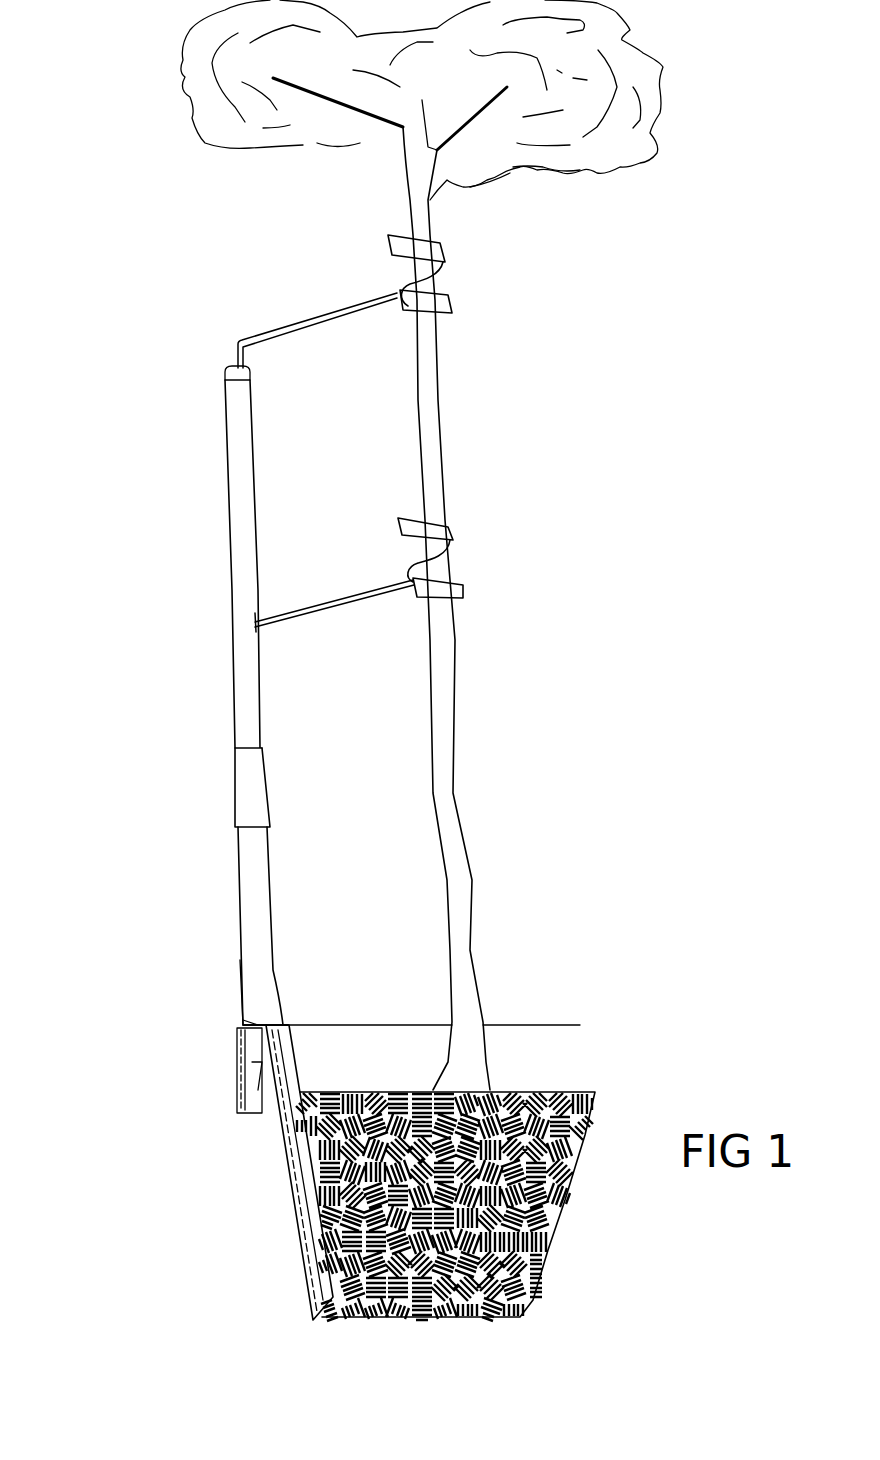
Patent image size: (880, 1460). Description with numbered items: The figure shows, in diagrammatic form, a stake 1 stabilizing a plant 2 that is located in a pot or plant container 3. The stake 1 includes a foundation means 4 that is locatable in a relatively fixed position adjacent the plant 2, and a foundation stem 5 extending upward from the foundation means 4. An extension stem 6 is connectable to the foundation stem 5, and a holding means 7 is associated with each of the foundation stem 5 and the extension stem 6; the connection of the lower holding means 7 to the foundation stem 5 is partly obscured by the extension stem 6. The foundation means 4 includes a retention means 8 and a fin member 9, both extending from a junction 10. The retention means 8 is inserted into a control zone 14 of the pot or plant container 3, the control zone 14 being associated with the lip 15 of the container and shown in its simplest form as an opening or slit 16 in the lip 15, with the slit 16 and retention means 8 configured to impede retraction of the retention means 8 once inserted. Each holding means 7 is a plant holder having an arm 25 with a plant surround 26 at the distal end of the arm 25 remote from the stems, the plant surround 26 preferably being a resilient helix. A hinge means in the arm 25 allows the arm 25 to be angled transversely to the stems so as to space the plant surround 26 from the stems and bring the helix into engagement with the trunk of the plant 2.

The stake 1 is at (120, 406).
The plant 2 is at (470, 399).
The pot or plant container 3 is at (585, 955).
The foundation means 4 is at (228, 1172).
The foundation stem 5 is at (250, 890).
The extension stem 6 is at (238, 550).
The holding means 7 is at (390, 443).
The retention means 8 is at (240, 1067).
The fin member 9 is at (303, 1180).
The junction 10 is at (253, 977).
The control zone 14 is at (220, 1055).
The lip 15 is at (283, 1025).
The slit 16 is at (258, 1025).
The arm 25 is at (307, 320).
The plant surround 26 is at (440, 250).